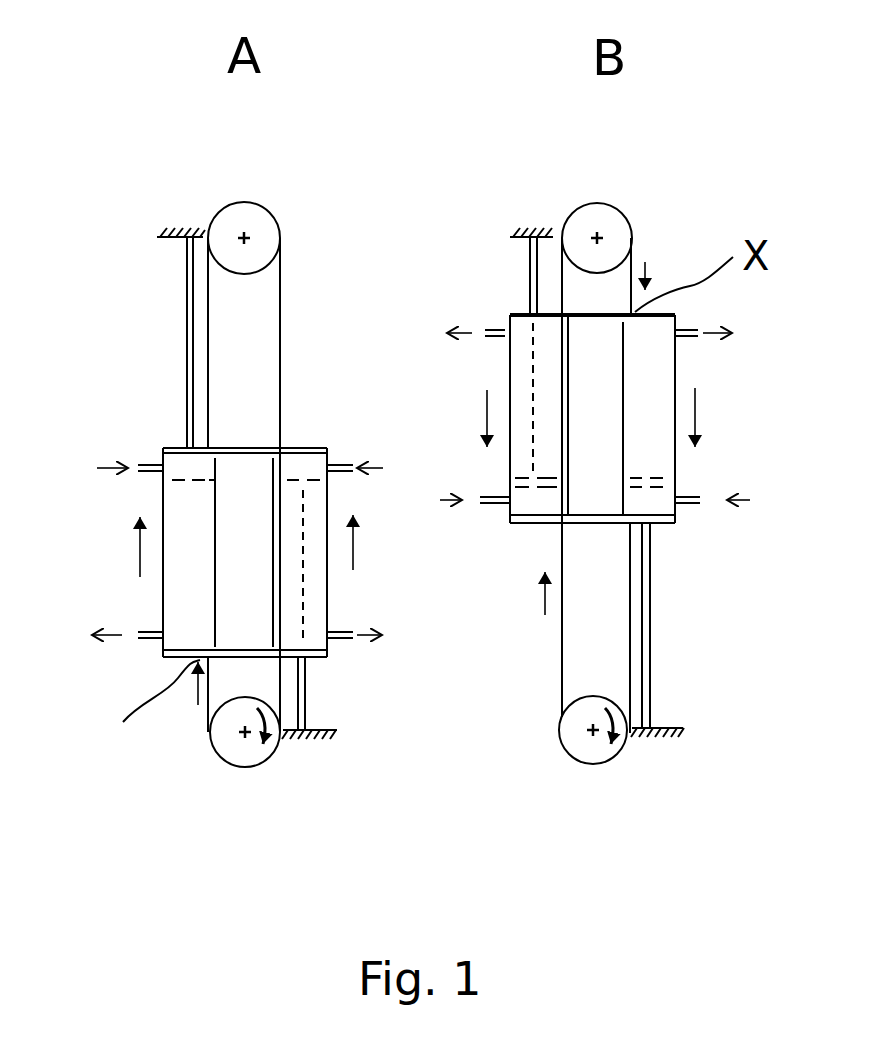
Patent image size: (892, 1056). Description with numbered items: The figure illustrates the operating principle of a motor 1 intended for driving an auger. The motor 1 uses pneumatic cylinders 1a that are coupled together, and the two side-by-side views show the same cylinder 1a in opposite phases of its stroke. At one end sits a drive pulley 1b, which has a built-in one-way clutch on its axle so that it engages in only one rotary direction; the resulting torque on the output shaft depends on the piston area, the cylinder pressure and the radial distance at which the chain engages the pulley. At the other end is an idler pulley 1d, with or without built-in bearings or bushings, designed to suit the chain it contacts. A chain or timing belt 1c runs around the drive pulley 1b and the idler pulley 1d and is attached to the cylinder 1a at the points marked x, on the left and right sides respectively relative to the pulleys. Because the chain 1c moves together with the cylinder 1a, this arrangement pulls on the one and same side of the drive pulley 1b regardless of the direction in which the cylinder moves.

The motor 1 is at (175, 850).
The cylinder 1a is at (653, 358).
The drive pulley 1b is at (603, 748).
The chain 1c is at (557, 690).
The idler pulley 1d is at (605, 222).